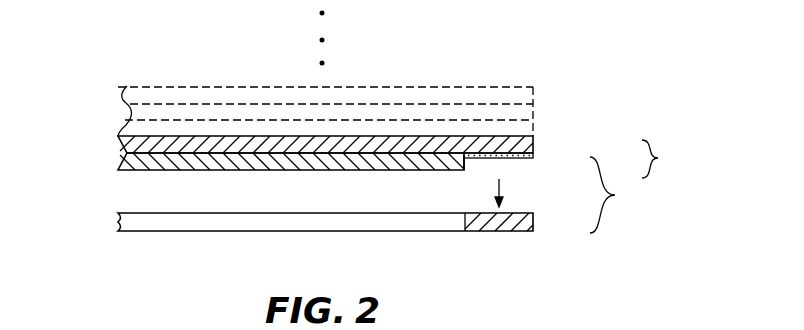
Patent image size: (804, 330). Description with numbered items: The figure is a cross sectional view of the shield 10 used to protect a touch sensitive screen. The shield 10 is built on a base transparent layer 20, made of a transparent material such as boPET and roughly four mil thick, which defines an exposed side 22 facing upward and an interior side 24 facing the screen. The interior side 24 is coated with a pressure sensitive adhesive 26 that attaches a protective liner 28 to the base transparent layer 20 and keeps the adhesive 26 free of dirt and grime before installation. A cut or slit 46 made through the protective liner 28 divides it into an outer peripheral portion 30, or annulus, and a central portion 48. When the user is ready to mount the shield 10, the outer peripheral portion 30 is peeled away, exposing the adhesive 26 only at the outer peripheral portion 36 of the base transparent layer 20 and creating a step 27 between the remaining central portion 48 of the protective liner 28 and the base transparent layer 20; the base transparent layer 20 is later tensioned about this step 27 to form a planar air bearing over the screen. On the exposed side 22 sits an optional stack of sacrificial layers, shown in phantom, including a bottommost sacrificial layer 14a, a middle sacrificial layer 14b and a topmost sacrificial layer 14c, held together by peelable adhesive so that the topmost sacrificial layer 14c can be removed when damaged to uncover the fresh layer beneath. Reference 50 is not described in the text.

The shield 10 is at (394, 143).
The bottommost sacrificial layer 14a is at (222, 128).
The sacrificial layer 14b is at (172, 113).
The topmost sacrificial layer 14c is at (133, 90).
The base transparent layer 20 is at (545, 153).
The exposed side 22 is at (308, 137).
The interior side 24 is at (340, 152).
The pressure sensitive adhesive 26 is at (508, 158).
The step 27 is at (473, 176).
The protective liner 28 is at (384, 221).
The outer peripheral portion 30 is at (545, 213).
The outer peripheral portion of the base transparent layer 36 is at (533, 80).
The cut or slit 46 is at (465, 228).
The central portion 48 is at (263, 171).
The adhesive layers 50 is at (265, 103).